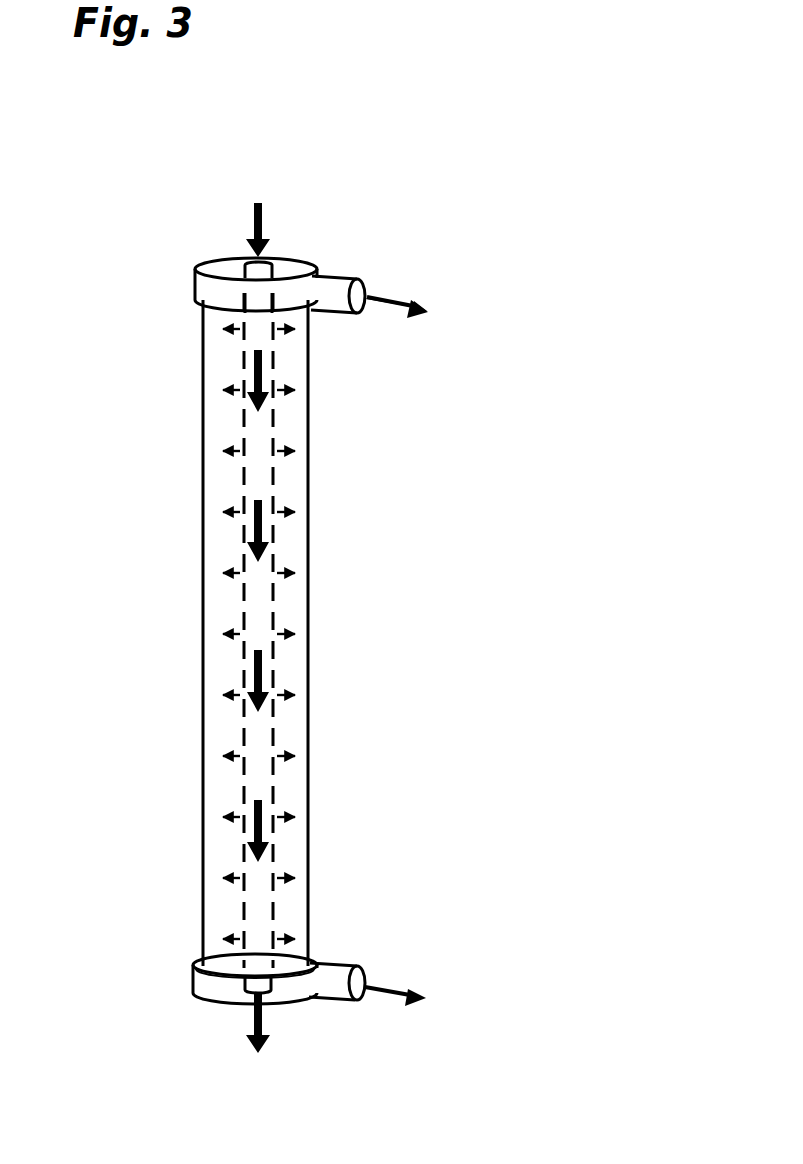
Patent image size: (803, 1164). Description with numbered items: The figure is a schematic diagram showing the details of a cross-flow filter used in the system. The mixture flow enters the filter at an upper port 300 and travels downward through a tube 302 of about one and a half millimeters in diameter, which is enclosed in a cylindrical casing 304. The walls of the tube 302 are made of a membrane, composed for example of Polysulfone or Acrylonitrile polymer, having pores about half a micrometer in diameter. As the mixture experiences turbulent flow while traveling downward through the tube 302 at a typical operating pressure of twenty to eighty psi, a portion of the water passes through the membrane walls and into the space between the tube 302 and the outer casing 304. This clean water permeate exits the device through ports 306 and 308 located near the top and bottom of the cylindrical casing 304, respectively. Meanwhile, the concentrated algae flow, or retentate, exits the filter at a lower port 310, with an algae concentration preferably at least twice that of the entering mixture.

The upper port 300 is at (250, 263).
The tube 302 is at (243, 657).
The cylindrical casing 304 is at (202, 553).
The port 306 is at (357, 313).
The port 308 is at (345, 967).
The lower port 310 is at (248, 992).